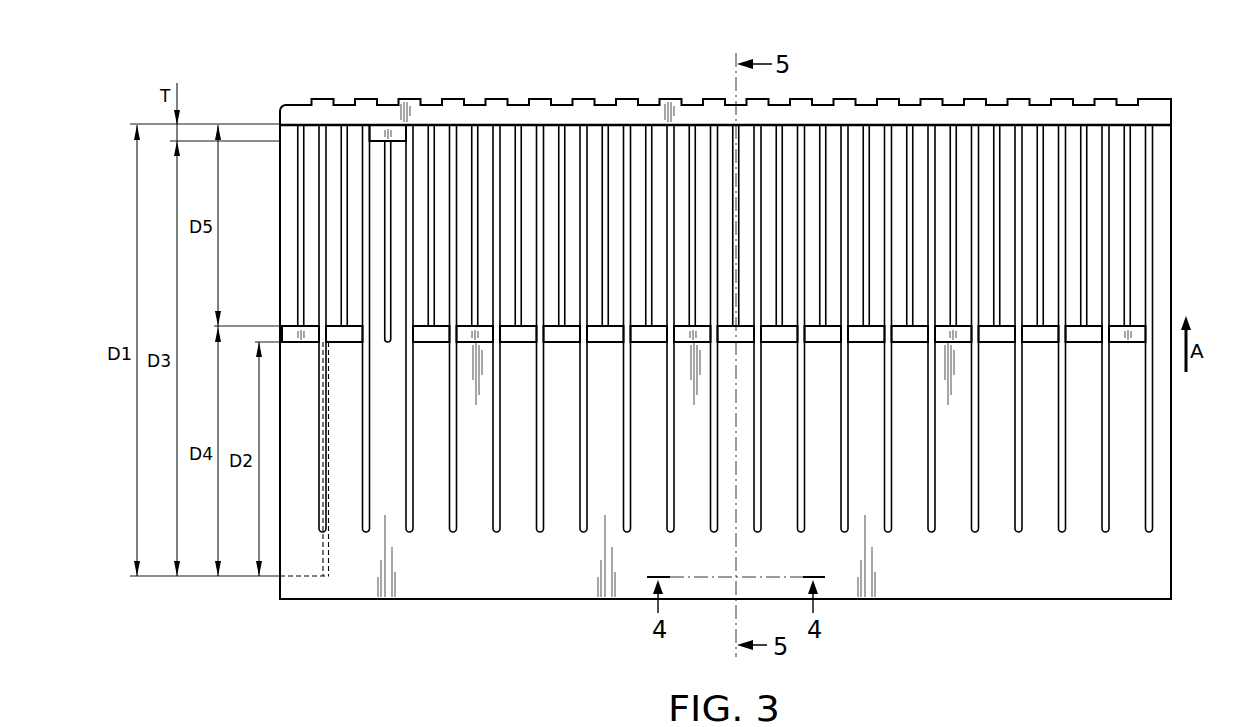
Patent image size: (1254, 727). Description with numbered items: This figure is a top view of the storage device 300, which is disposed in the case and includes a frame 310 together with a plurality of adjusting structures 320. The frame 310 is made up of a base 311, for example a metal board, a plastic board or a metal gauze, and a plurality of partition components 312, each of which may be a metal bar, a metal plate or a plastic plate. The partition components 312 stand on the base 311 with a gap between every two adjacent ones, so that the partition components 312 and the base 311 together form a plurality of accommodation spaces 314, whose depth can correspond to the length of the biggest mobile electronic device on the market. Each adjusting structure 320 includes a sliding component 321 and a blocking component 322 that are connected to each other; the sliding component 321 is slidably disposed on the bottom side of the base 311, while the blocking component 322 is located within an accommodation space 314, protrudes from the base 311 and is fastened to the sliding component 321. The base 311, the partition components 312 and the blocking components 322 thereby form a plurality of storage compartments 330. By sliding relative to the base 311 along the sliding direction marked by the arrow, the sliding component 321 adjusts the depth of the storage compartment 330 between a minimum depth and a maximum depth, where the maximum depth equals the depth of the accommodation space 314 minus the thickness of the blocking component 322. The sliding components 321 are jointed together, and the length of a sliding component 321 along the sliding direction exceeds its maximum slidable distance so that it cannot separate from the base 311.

The storage device 300 is at (214, 50).
The frame 310 is at (278, 102).
The base 311 is at (1122, 575).
The partition component 312 is at (1153, 179).
The accommodation space 314 is at (1141, 160).
The adjusting structure 320 is at (278, 310).
The sliding component 321 is at (311, 578).
The blocking component 322 is at (1141, 327).
The storage compartment 330 is at (1132, 420).